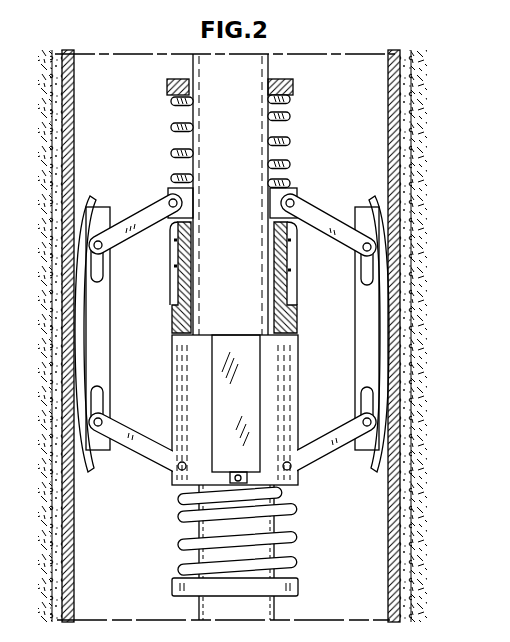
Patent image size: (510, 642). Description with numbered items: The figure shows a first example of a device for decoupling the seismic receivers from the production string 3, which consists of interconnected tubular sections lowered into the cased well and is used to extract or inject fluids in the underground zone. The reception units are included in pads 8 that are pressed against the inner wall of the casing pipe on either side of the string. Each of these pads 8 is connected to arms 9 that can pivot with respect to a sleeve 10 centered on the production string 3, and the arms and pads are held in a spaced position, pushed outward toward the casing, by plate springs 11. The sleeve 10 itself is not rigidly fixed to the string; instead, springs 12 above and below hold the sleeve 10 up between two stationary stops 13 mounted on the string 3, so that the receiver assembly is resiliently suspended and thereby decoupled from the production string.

The production string 3 is at (205, 72).
The pads 8 is at (362, 323).
The arms 9 is at (316, 208).
The sleeve 10 is at (297, 482).
The plate springs 11 is at (311, 238).
The springs 12 is at (288, 118).
The stationary stops 13 is at (293, 88).